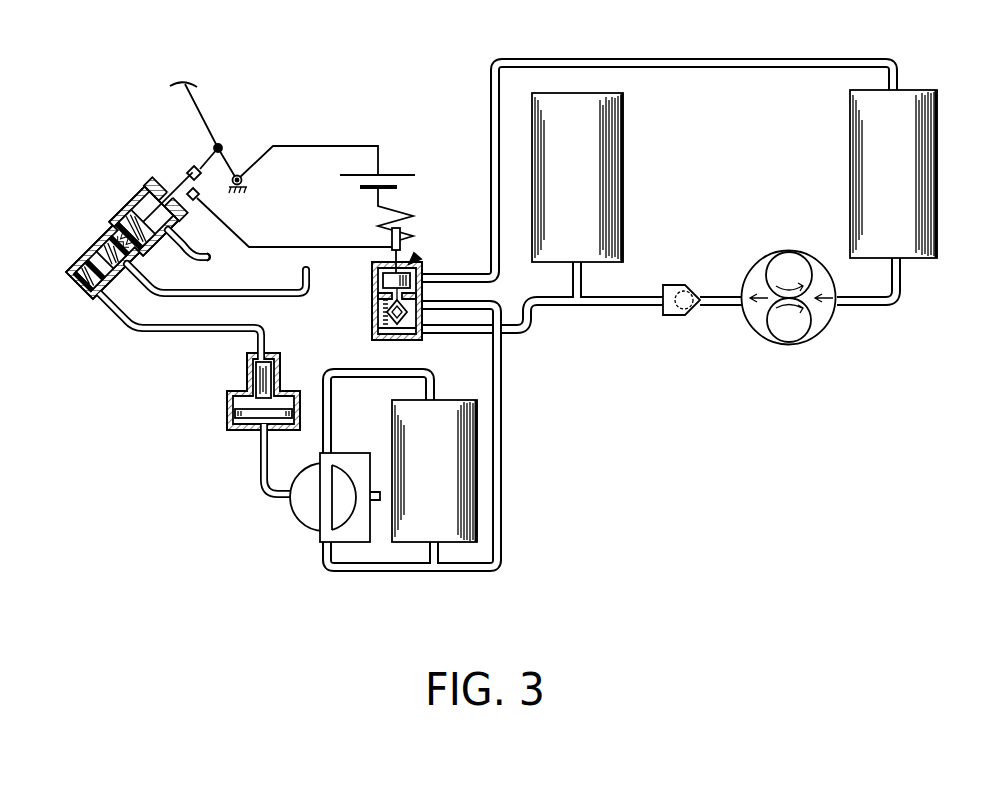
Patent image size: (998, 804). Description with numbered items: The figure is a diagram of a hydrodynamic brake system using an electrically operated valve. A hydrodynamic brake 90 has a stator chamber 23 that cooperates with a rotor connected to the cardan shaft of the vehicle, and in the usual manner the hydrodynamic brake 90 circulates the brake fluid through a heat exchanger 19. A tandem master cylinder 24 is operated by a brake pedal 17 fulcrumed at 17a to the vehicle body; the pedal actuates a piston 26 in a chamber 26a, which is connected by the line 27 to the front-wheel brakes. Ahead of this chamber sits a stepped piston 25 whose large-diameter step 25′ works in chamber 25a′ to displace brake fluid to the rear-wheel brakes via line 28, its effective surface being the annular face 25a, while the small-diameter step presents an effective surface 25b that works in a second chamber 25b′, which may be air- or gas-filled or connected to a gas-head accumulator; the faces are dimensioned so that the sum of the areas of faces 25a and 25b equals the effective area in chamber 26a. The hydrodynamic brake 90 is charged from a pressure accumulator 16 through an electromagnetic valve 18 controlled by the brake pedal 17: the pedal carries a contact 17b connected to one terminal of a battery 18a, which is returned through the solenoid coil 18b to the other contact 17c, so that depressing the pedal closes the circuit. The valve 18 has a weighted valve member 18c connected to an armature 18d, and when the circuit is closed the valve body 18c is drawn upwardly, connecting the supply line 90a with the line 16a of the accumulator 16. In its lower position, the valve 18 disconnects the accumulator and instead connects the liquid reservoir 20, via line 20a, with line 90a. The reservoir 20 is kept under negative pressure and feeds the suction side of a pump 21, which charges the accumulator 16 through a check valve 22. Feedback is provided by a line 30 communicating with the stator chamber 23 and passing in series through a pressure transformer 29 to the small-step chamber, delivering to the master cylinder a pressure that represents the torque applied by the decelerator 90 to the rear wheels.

The pressure accumulator 16 is at (621, 119).
The line of the accumulator 16a is at (526, 334).
The brake pedal 17 is at (188, 83).
The fulcrum 17a is at (243, 182).
The contact 17b is at (192, 167).
The contact 17c is at (199, 197).
The electromagnetic valve 18 is at (413, 258).
The battery 18a is at (394, 173).
The solenoid coil 18b is at (378, 228).
The weighted valve member 18c is at (378, 316).
The armature 18d is at (392, 250).
The heat exchanger 19 is at (476, 447).
The liquid reservoir 20 is at (938, 116).
The line 20a is at (490, 169).
The pump 21 is at (825, 326).
The check valve 22 is at (690, 314).
The stator chamber 23 is at (300, 521).
The tandem master cylinder 24 is at (146, 189).
The stepped piston 25 is at (100, 248).
The large-diameter step 25′ is at (128, 218).
The annular face 25a is at (106, 236).
The chamber 25a′ is at (148, 256).
The effective surface of the small-diameter step 25b is at (88, 266).
The piston seal 25b′ is at (108, 291).
The piston 26 is at (167, 176).
The chamber 26a is at (172, 229).
The line 27 is at (208, 262).
The line 28 is at (257, 298).
The pressure transformer 29 is at (258, 403).
The line 30 is at (113, 314).
The hydrodynamic brake 90 is at (357, 530).
The supply line 90a is at (503, 504).